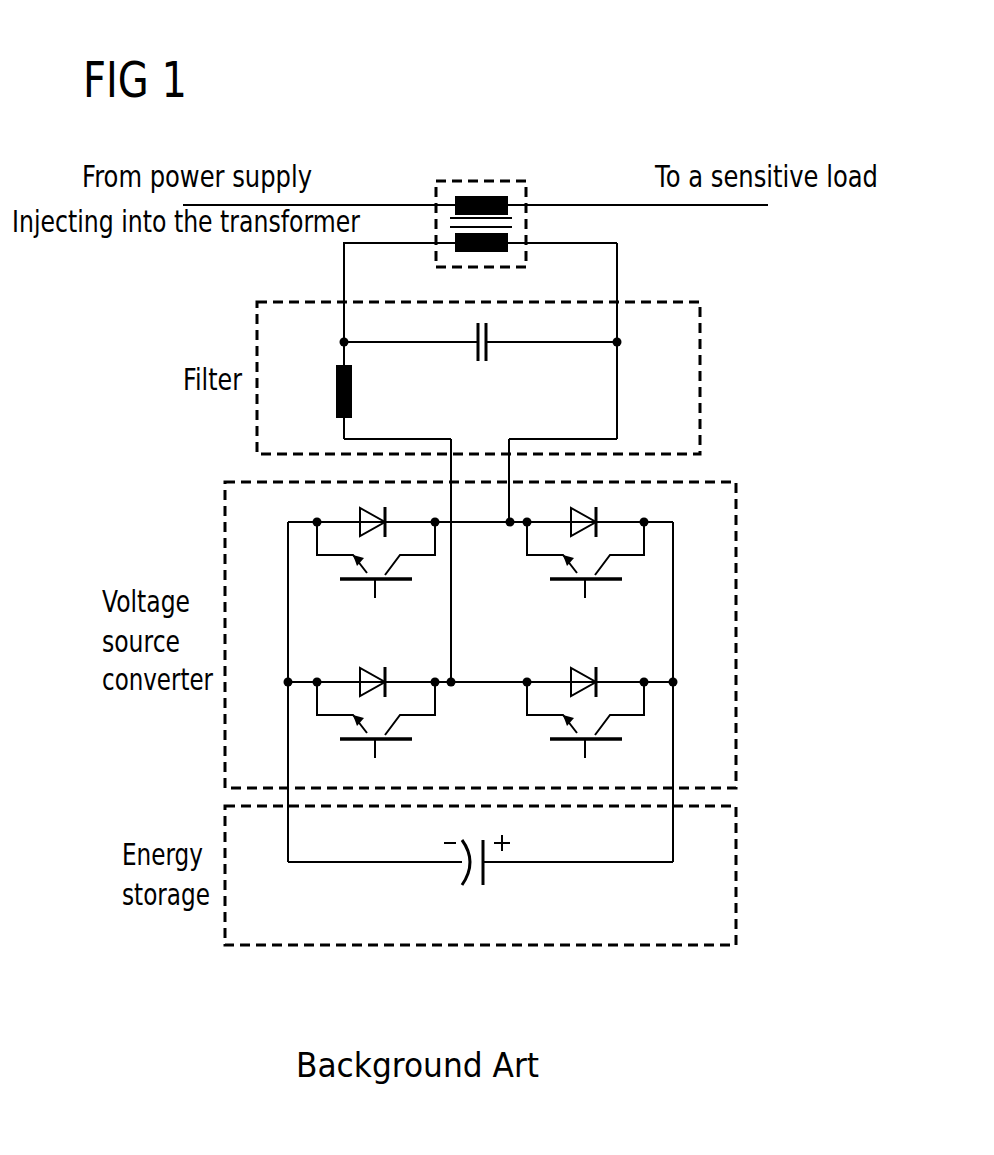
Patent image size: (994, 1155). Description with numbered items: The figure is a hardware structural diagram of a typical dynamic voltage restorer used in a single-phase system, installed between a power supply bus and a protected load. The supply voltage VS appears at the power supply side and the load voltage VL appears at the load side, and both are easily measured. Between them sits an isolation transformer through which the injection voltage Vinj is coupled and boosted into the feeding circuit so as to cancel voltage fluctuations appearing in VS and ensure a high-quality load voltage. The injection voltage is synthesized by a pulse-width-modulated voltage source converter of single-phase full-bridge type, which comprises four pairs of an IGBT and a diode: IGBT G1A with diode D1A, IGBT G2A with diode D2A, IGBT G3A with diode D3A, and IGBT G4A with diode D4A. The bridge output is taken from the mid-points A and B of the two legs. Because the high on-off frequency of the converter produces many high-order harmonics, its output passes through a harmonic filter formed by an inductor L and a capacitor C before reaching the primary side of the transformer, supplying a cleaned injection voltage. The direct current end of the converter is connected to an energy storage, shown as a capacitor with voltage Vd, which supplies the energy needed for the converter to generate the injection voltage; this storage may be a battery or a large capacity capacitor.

The injection voltage Vinj is at (515, 162).
The power supply side voltage VS is at (394, 160).
The load side voltage VL is at (574, 160).
The filter inductor L is at (332, 391).
The filter capacitor C is at (480, 364).
The diode D1A is at (345, 512).
The diode D2A is at (611, 512).
The diode D3A is at (345, 672).
The diode D4A is at (611, 672).
The IGBT G1A is at (376, 570).
The IGBT G2A is at (592, 570).
The IGBT G3A is at (376, 730).
The IGBT G4A is at (585, 730).
The converter output node A is at (461, 667).
The converter output node B is at (510, 541).
The energy storage DC voltage Vd is at (477, 886).